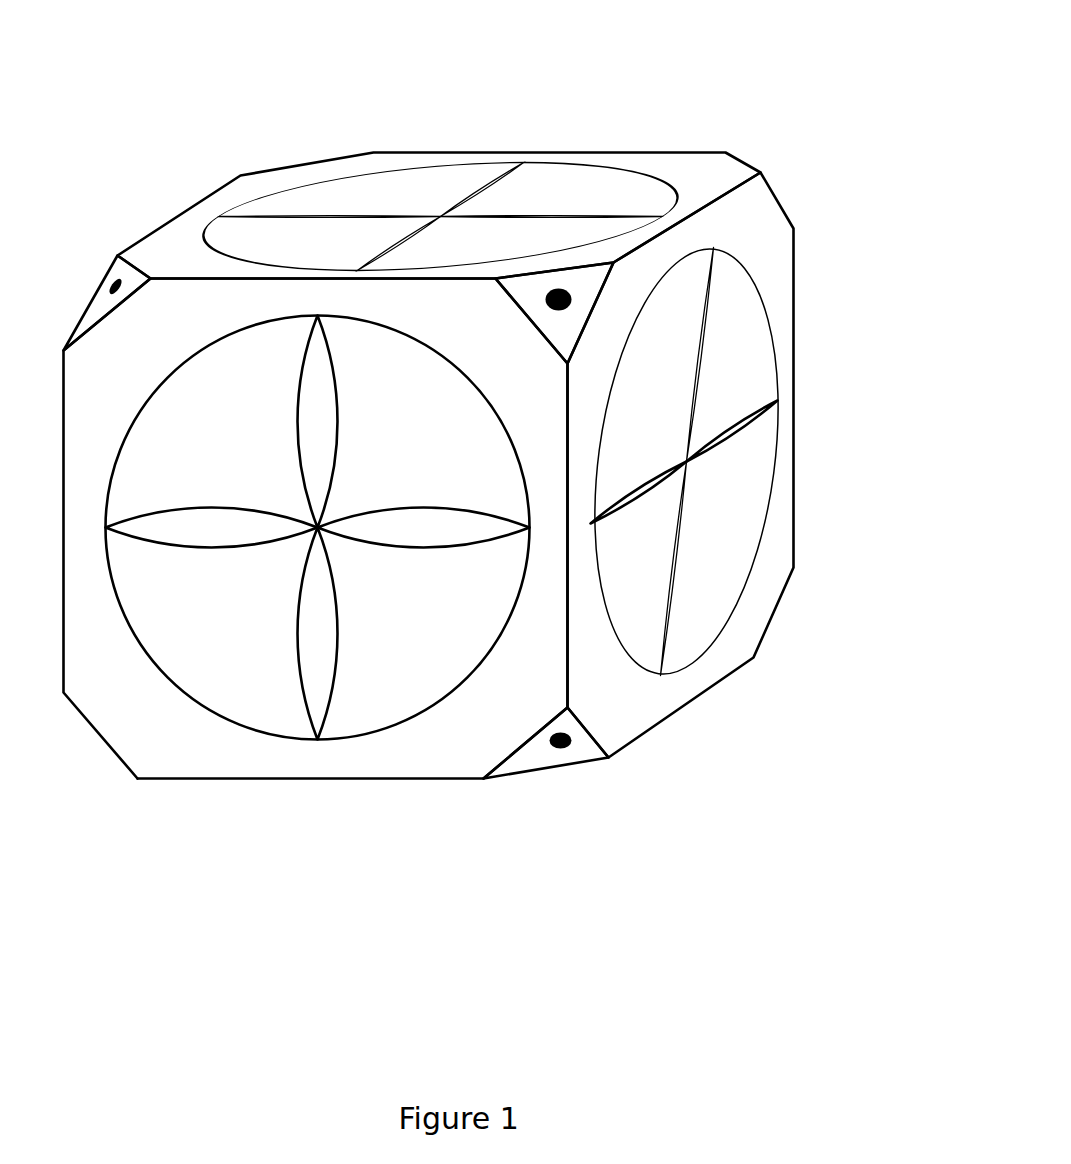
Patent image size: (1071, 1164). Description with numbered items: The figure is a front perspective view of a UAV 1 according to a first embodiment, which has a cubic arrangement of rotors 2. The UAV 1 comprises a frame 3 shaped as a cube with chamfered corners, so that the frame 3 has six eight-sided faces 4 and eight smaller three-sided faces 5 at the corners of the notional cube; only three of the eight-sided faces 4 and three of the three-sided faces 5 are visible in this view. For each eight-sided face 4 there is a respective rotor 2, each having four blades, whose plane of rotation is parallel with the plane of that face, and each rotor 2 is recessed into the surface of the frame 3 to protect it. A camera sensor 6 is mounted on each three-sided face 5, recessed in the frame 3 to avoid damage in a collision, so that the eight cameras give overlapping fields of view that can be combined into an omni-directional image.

The UAV 1 is at (461, 455).
The rotor 2 is at (493, 192).
The frame 3 is at (442, 778).
The eight-sided face 4 is at (717, 183).
The three-sided face 5 is at (105, 310).
The camera sensor 6 is at (112, 290).